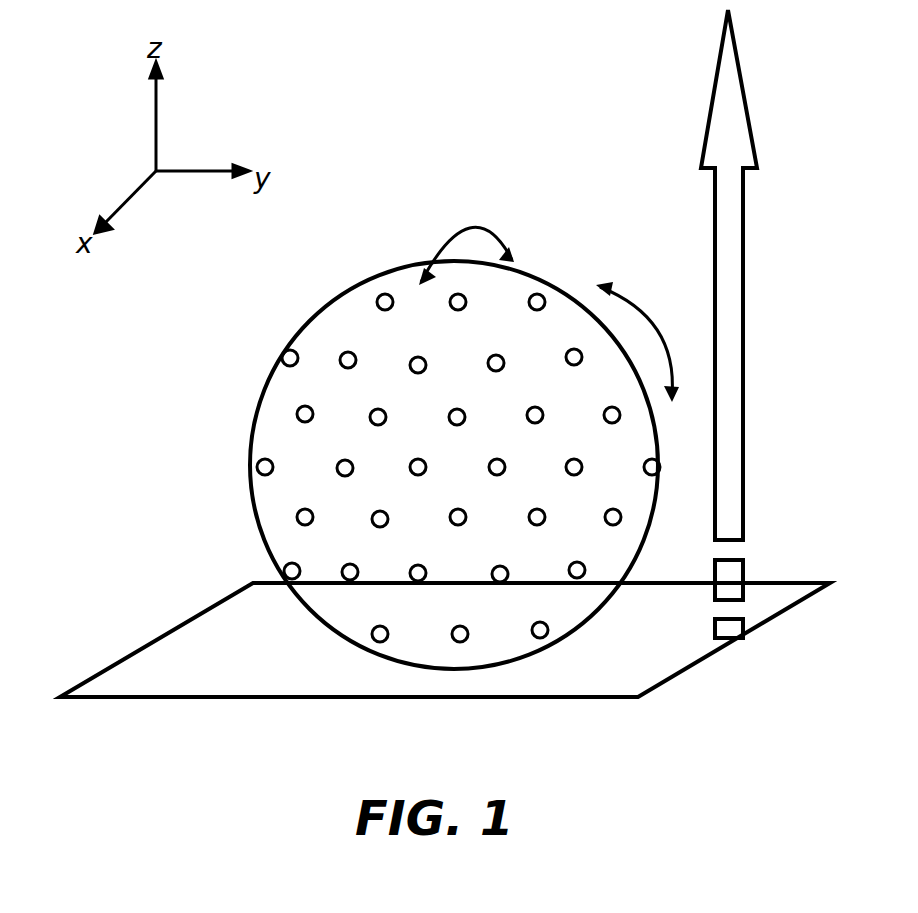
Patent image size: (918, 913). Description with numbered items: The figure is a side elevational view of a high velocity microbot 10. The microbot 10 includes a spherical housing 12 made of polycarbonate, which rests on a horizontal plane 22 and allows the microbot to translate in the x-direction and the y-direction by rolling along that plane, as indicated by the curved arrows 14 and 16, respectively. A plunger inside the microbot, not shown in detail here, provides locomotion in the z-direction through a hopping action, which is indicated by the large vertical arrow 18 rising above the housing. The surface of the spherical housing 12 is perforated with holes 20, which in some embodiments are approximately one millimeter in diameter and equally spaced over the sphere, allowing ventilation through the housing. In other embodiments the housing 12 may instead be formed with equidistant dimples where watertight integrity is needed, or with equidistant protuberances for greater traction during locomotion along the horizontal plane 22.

The high velocity microbot 10 is at (183, 415).
The spherical housing 12 is at (312, 312).
The arrow 14 is at (470, 228).
The arrow 16 is at (655, 322).
The arrow 18 is at (743, 252).
The holes 20 is at (253, 467).
The horizontal plane 22 is at (192, 676).